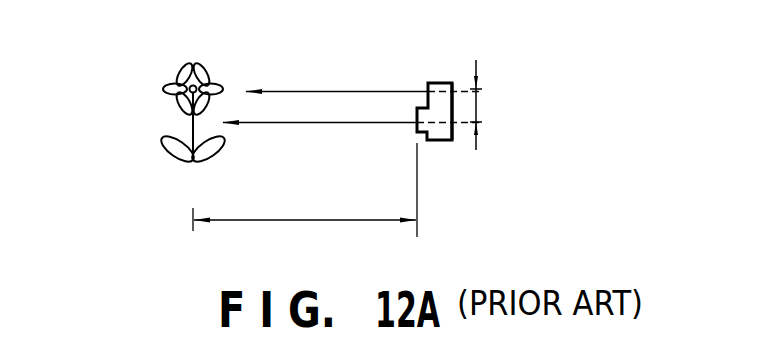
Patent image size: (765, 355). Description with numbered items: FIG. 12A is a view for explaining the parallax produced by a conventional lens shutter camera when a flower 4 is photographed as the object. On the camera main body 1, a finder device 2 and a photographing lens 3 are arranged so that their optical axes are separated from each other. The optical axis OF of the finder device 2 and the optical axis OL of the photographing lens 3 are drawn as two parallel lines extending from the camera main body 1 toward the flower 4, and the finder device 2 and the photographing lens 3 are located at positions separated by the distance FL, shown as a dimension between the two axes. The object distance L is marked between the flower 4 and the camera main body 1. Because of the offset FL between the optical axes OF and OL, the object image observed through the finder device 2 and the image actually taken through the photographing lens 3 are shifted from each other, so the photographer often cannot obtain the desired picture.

The camera main body 1 is at (435, 82).
The finder device 2 is at (452, 84).
The photographing lens 3 is at (417, 143).
The flower 4 is at (163, 90).
The optical axis of the finder device OF is at (341, 91).
The optical axis of the photographing lens OL is at (341, 124).
The distance FL is at (477, 106).
The object distance L is at (304, 230).